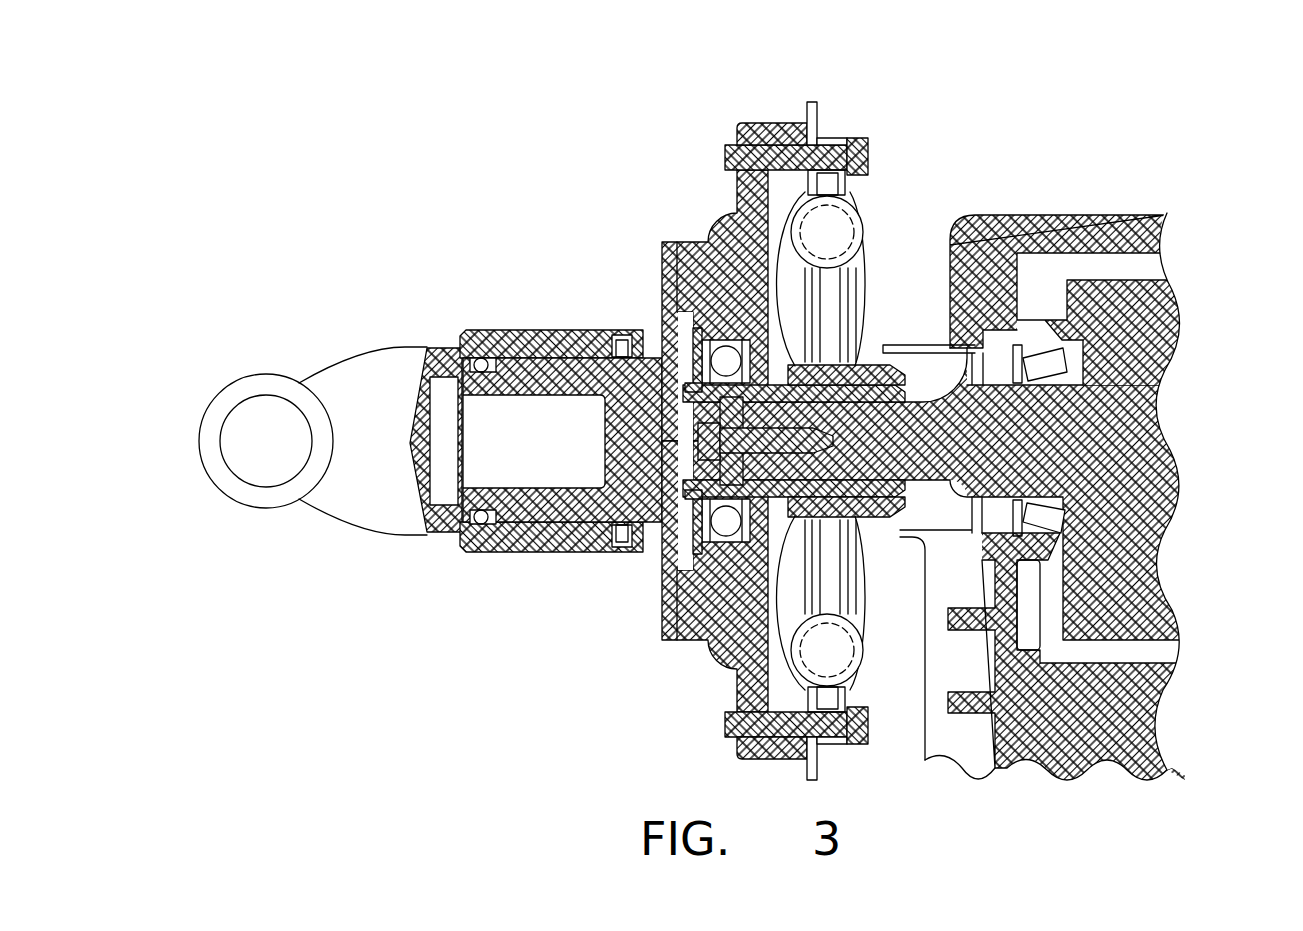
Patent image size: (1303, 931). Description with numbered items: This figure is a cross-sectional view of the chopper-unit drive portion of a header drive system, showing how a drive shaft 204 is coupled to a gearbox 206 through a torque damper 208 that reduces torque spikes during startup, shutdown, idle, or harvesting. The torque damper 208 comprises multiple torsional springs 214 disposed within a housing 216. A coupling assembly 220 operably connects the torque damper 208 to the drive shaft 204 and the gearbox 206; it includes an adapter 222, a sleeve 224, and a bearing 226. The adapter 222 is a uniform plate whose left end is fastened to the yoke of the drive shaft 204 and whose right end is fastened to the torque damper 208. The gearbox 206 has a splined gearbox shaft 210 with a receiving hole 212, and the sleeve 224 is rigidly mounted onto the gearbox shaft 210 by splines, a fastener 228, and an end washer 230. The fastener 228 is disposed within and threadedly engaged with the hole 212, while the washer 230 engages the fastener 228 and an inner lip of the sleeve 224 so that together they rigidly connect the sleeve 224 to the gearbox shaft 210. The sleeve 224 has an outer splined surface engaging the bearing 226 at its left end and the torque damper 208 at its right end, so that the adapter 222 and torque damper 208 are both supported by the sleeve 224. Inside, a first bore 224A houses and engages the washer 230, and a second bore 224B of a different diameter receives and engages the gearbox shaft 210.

The drive shaft 204 is at (207, 387).
The gearbox 206 is at (1170, 491).
The torque damper 208 is at (844, 228).
The gearbox shaft 210 is at (925, 362).
The receiving hole 212 is at (858, 408).
The torsional springs 214 is at (852, 148).
The housing 216 is at (856, 246).
The coupling assembly 220 is at (715, 106).
The adapter 222 is at (697, 238).
The sleeve 224 is at (770, 332).
The first bore 224A is at (697, 406).
The second bore 224B is at (870, 473).
The bearing 226 is at (706, 342).
The fastener 228 is at (707, 436).
The end washer 230 is at (613, 545).